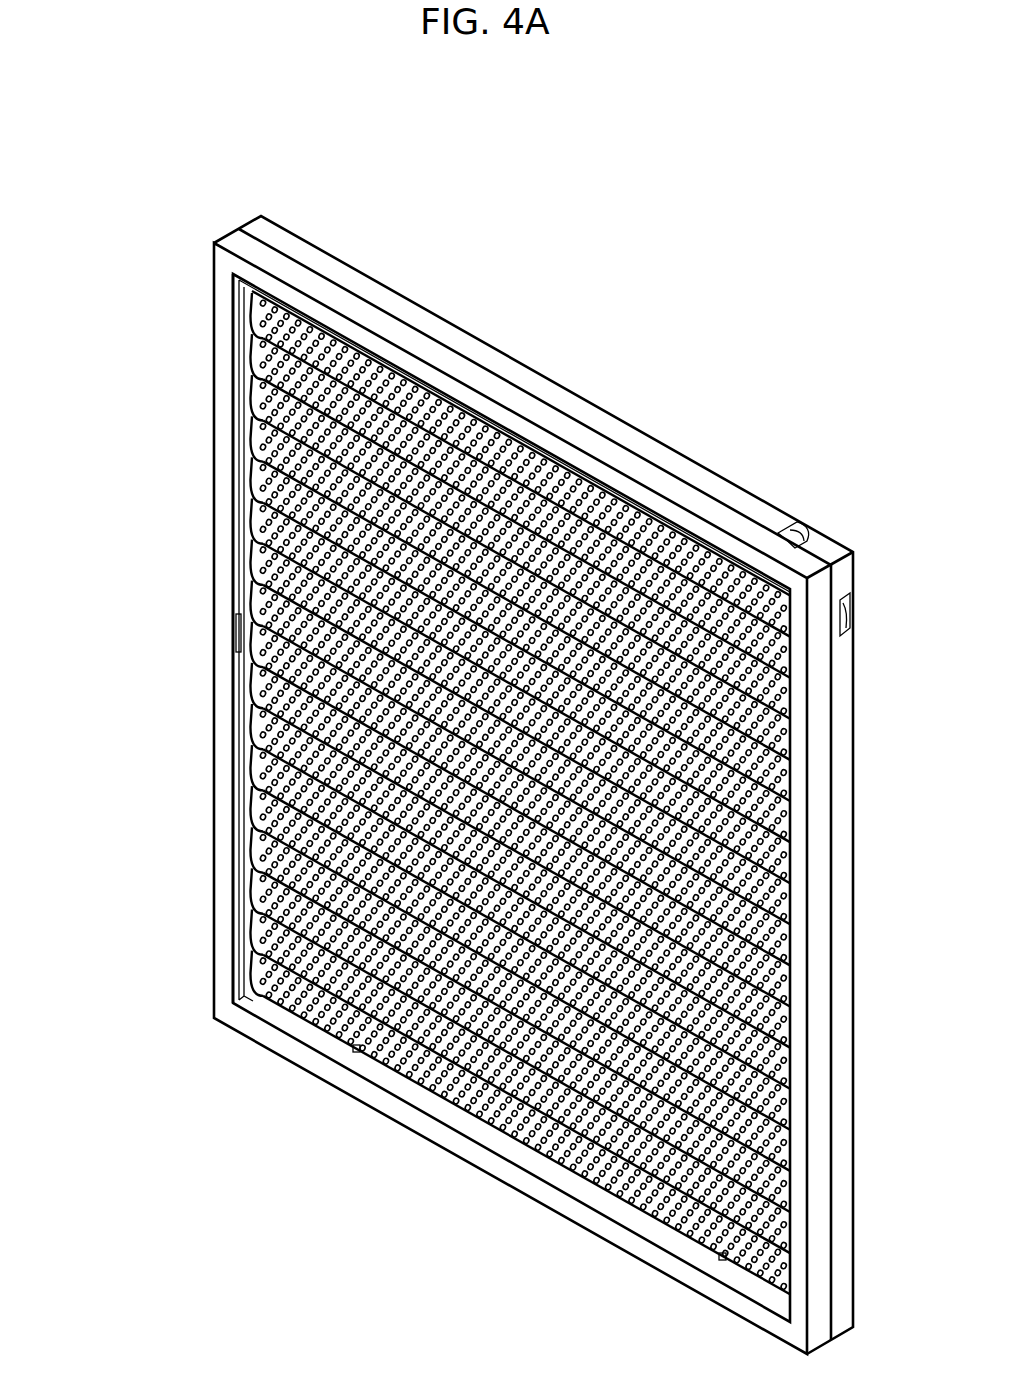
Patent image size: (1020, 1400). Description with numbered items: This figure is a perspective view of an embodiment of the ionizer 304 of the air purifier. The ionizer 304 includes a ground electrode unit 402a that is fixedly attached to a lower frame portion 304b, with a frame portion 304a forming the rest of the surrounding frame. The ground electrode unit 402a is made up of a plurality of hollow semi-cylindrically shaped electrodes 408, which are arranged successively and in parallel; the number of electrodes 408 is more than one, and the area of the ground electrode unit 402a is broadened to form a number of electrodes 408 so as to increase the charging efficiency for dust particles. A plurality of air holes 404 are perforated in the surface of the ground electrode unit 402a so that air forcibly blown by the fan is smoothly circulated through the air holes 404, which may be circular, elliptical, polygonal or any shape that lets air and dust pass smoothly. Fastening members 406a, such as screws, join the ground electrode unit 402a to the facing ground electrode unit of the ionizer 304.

The ionizer 304 is at (730, 290).
The upper frame portion 304a is at (583, 438).
The lower frame portion 304b is at (725, 495).
The ground electrode unit 402a is at (240, 400).
The air holes 404 is at (257, 356).
The fastening members 406a is at (357, 1050).
The hollow semi-cylindrically shaped electrodes 408 is at (233, 647).